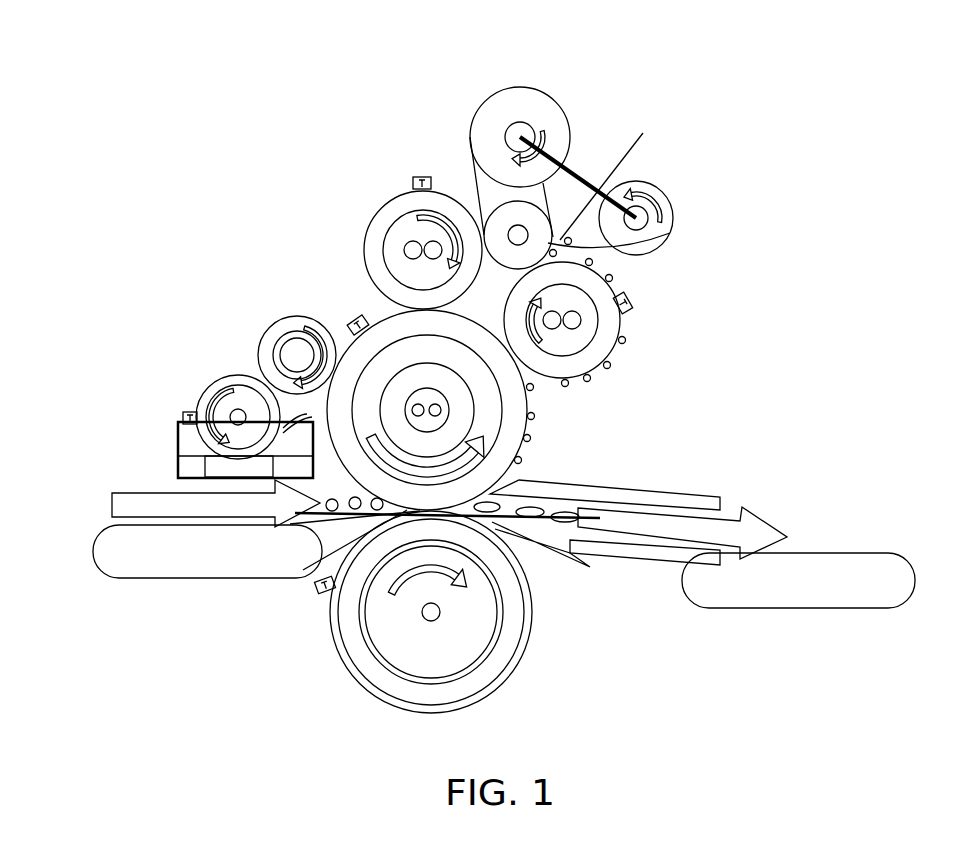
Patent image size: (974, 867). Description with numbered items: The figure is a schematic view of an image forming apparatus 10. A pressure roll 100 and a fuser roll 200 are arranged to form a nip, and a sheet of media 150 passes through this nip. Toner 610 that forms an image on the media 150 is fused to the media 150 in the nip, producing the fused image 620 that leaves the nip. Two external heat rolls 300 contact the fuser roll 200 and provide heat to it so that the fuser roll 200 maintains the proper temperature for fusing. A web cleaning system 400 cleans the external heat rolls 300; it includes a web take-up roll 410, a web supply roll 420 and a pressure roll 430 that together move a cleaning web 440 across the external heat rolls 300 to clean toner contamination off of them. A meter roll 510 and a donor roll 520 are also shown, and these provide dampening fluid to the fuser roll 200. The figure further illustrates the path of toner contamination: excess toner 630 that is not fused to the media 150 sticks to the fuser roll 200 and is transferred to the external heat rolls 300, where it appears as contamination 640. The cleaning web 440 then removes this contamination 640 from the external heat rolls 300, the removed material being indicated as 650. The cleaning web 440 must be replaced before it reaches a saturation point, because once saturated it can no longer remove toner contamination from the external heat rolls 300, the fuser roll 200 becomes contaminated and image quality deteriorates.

The image forming apparatus 10 is at (222, 152).
The pressure roll 100 is at (533, 612).
The sheet of media 150 is at (310, 518).
The fuser roll 200 is at (533, 407).
The external heat rolls 300 is at (388, 202).
The web cleaning system 400 is at (600, 110).
The web take-up roll 410 is at (505, 87).
The web supply roll 420 is at (657, 190).
The pressure roll 430 is at (618, 179).
The cleaning web 440 is at (480, 170).
The meter roll 510 is at (238, 374).
The donor roll 520 is at (299, 316).
The toner 610 is at (405, 512).
The fused image 620 is at (533, 500).
The excess toner 630 is at (540, 418).
The contamination 640 is at (613, 279).
The removed contamination 650 is at (670, 233).